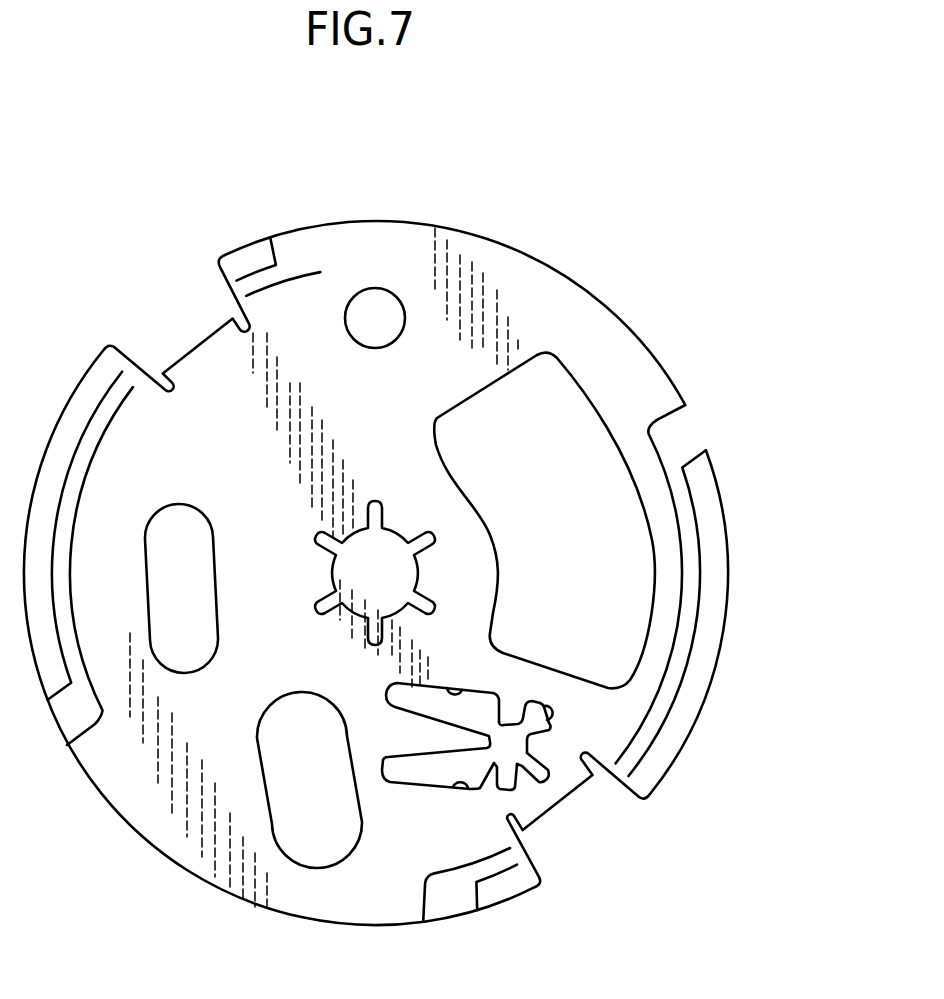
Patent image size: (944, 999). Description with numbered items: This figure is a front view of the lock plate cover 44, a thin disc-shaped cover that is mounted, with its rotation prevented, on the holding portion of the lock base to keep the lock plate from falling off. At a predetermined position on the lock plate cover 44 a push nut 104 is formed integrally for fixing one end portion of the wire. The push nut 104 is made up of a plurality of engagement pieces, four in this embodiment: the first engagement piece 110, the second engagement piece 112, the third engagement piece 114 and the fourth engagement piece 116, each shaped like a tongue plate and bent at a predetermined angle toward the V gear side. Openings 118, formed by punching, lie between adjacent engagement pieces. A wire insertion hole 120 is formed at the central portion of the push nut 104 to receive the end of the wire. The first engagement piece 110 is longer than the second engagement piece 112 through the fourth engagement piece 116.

The lock plate cover 44 is at (625, 210).
The push nut 104 is at (586, 714).
The first engagement piece 110 is at (448, 742).
The second engagement piece 112 is at (512, 715).
The third engagement piece 114 is at (540, 743).
The fourth engagement piece 116 is at (506, 776).
The openings 118 is at (448, 700).
The wire insertion hole 120 is at (503, 748).